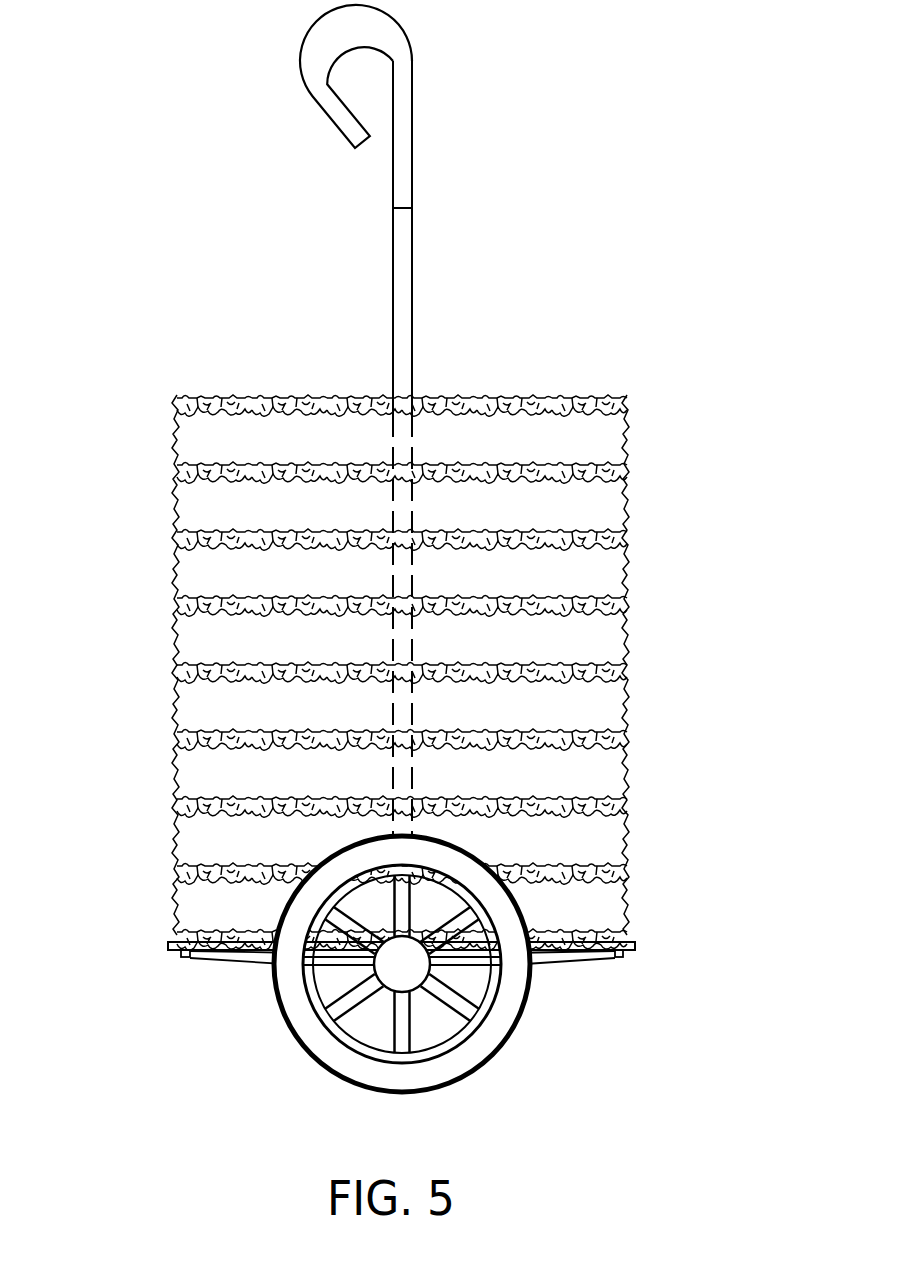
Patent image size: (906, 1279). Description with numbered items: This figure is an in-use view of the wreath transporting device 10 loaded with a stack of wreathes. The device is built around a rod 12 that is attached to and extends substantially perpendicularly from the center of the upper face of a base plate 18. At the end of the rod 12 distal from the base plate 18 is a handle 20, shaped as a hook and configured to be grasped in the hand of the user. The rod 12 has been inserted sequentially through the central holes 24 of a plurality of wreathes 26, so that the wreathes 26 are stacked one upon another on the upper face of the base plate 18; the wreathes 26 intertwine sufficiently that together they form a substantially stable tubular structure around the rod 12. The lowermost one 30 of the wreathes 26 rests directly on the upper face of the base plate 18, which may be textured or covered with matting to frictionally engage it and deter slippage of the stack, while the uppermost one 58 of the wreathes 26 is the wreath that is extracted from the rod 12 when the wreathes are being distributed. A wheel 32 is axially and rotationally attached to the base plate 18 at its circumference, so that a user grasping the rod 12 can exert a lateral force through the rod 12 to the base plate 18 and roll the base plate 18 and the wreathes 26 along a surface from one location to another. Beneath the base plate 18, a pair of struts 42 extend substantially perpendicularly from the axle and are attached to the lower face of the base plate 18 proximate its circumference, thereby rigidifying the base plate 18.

The wreath transporting device 10 is at (410, 556).
The rod 12 is at (511, 422).
The base plate 18 is at (640, 945).
The handle 20 is at (385, 20).
The central holes 24 is at (407, 577).
The wreathes 26 is at (628, 580).
The lowermost one of the wreathes 30 is at (208, 898).
The wheel 32 is at (320, 1059).
The strut 42 is at (231, 965).
The uppermost one of the wreathes 58 is at (410, 672).